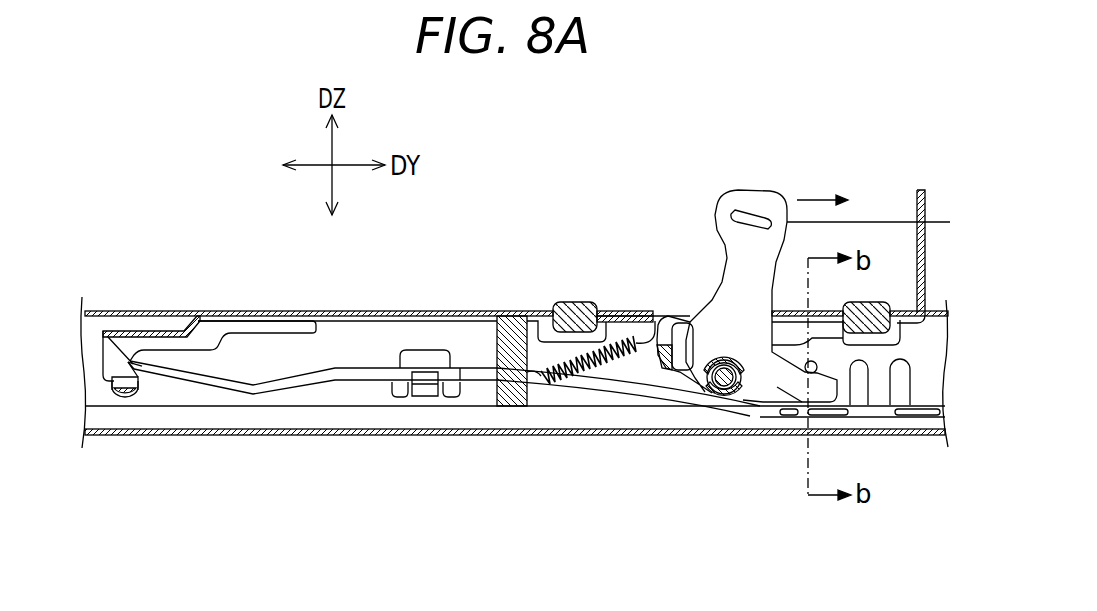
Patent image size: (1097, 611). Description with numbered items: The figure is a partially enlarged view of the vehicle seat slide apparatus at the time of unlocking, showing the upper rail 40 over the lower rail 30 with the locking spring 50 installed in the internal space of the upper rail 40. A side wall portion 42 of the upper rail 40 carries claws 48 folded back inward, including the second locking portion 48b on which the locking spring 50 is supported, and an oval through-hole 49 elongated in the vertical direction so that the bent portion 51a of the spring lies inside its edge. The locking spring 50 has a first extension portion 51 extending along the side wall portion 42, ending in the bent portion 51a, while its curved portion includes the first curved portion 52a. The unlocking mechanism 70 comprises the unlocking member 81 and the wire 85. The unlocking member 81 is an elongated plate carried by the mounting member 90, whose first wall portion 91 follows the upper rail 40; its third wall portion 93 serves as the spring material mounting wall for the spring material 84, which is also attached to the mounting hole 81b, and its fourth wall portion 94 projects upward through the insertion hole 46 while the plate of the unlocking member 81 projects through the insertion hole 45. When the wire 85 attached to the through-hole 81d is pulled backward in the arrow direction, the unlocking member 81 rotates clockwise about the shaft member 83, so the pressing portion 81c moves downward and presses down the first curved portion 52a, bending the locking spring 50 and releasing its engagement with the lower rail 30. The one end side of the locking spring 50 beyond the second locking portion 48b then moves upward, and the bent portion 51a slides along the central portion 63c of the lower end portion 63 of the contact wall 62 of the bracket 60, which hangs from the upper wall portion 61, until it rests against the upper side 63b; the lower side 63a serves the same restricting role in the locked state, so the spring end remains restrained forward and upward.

The lower rail 30 is at (225, 436).
The upper rail 40 is at (280, 311).
The side wall portion 42 is at (375, 321).
The insertion hole 45 is at (655, 311).
The insertion hole 46 is at (897, 311).
The claw 48 is at (425, 422).
The second locking portion 48b is at (425, 394).
The through-hole 49 is at (137, 393).
The locking spring 50 is at (468, 367).
The first extension portion 51 is at (347, 368).
The bent portion 51a is at (122, 360).
The first curved portion 52a is at (793, 417).
The bracket 60 is at (203, 330).
The upper wall portion 61 is at (142, 331).
The contact wall 62 is at (105, 347).
The lower end portion 63 is at (105, 378).
The lower side 63a is at (118, 397).
The upper side 63b is at (142, 366).
The central portion 63c is at (124, 397).
The unlocking mechanism 70 is at (827, 175).
The unlocking member 81 is at (777, 247).
The mounting hole 81b is at (682, 370).
The pressing portion 81c is at (790, 393).
The through-hole 81d is at (737, 207).
The shaft member 83 is at (727, 397).
The spring material 84 is at (605, 378).
The wire 85 is at (873, 222).
The mounting member 90 is at (590, 302).
The first wall portion 91 is at (620, 310).
The third wall portion 93 is at (520, 407).
The fourth wall portion 94 is at (923, 200).